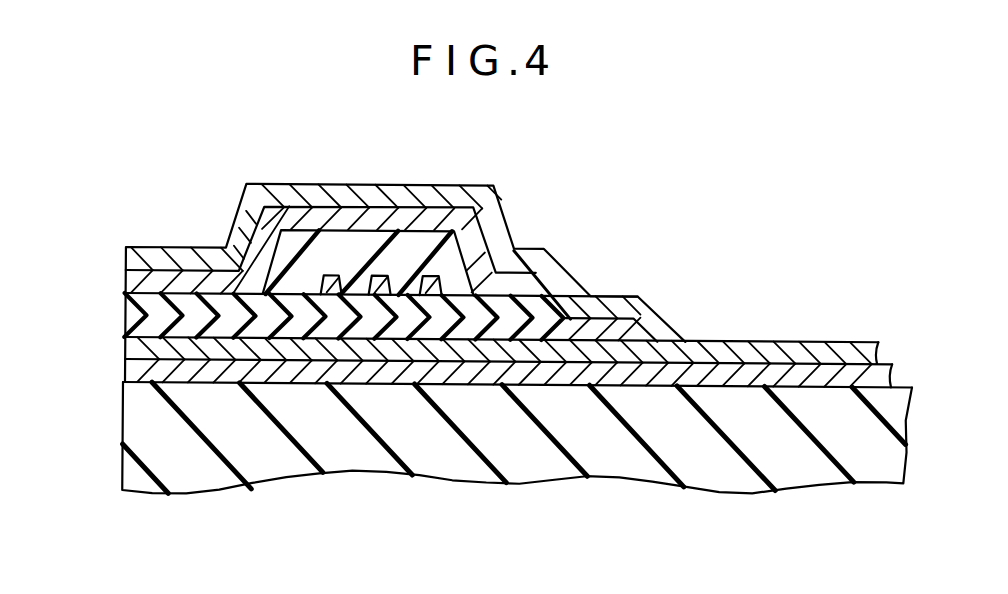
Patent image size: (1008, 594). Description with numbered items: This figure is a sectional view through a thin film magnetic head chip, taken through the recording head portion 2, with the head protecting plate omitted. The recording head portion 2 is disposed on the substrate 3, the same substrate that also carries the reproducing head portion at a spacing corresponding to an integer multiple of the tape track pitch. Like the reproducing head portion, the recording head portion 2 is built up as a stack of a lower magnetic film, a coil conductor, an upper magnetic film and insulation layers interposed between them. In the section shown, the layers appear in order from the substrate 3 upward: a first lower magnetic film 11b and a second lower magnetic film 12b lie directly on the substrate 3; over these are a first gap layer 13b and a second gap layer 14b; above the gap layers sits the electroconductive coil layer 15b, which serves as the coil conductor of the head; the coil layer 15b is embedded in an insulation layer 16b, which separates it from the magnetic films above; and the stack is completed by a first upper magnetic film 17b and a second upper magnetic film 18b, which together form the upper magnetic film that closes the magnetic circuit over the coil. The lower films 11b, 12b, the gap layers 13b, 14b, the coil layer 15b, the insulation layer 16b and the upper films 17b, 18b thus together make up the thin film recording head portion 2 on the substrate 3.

The recording head portion 2 is at (485, 338).
The substrate 3 is at (147, 443).
The first lower magnetic film 11b is at (267, 375).
The second lower magnetic film 12b is at (127, 361).
The first gap layer 13b is at (126, 328).
The second gap layer 14b is at (130, 310).
The electroconductive coil layer 15b is at (380, 272).
The insulation layer 16b is at (293, 247).
The first upper magnetic film 17b is at (124, 284).
The second upper magnetic film 18b is at (126, 263).